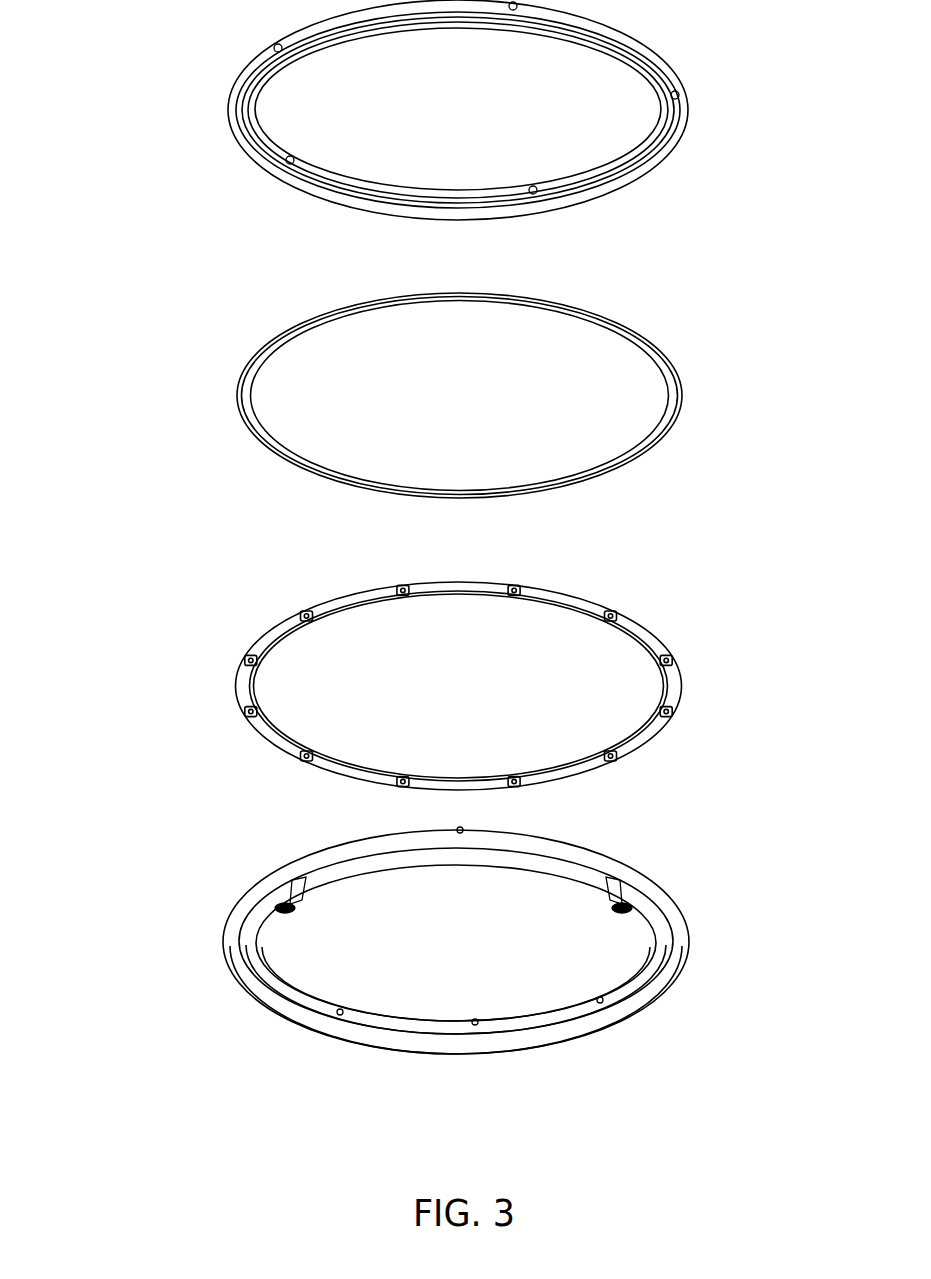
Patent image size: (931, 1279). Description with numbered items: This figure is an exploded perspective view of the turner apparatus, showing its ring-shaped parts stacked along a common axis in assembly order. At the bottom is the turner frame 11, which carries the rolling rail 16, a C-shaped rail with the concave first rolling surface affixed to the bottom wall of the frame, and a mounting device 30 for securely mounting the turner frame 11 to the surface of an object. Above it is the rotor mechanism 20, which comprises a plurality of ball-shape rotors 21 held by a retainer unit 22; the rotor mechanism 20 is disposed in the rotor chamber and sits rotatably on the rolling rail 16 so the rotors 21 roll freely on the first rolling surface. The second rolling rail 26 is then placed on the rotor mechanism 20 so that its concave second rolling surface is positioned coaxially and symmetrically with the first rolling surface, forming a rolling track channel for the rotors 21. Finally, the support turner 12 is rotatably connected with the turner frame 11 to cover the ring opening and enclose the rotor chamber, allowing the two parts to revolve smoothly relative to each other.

The turner frame 11 is at (428, 926).
The support turner 12 is at (252, 122).
The rolling rail 16 is at (688, 930).
The rotor mechanism 20 is at (435, 657).
The ball-shape rotors 21 is at (520, 588).
The retainer unit 22 is at (236, 674).
The second rolling rail 26 is at (238, 374).
The mounting device 30 is at (636, 880).